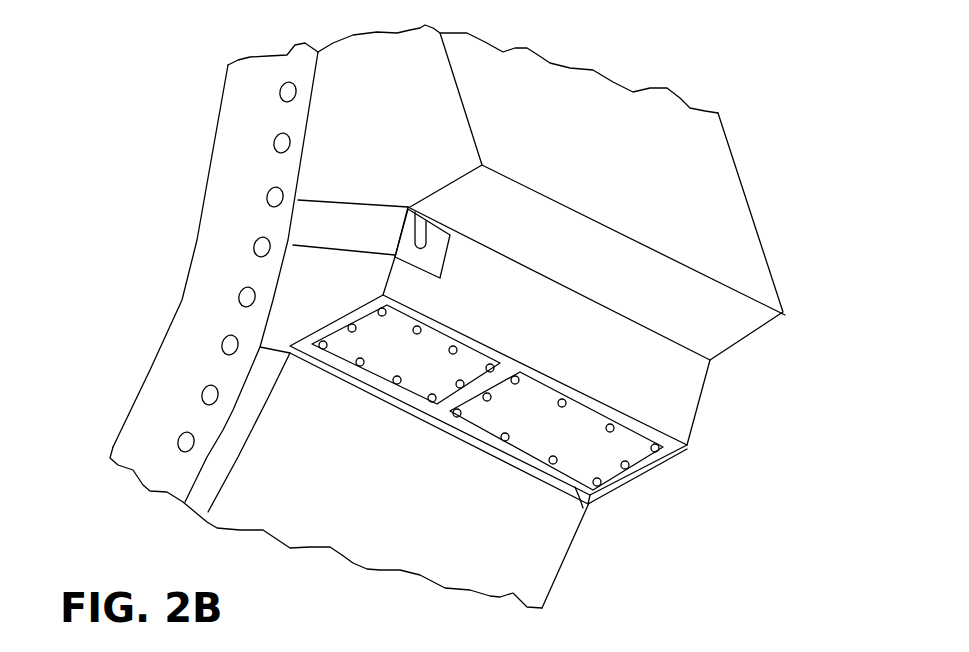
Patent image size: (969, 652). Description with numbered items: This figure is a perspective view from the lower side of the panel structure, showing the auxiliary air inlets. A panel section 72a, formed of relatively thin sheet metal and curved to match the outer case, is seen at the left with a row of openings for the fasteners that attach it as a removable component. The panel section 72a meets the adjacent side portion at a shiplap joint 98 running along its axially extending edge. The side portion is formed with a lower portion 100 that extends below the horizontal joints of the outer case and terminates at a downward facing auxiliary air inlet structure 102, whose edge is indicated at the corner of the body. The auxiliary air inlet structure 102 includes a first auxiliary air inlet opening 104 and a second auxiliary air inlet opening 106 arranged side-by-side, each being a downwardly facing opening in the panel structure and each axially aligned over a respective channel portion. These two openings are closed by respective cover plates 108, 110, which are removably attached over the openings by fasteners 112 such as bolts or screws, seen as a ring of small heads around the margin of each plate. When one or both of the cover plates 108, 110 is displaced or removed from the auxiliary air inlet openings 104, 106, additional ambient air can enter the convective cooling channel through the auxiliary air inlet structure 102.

The panel section 72a is at (388, 517).
The shiplap joint 98 is at (473, 452).
The lower portion 100 is at (728, 203).
The auxiliary air inlet structure 102 is at (695, 450).
The first auxiliary air inlet opening 104 is at (405, 395).
The second auxiliary air inlet opening 106 is at (572, 483).
The cover plate 108 is at (387, 357).
The cover plate 110 is at (535, 440).
The fasteners 112 is at (377, 300).